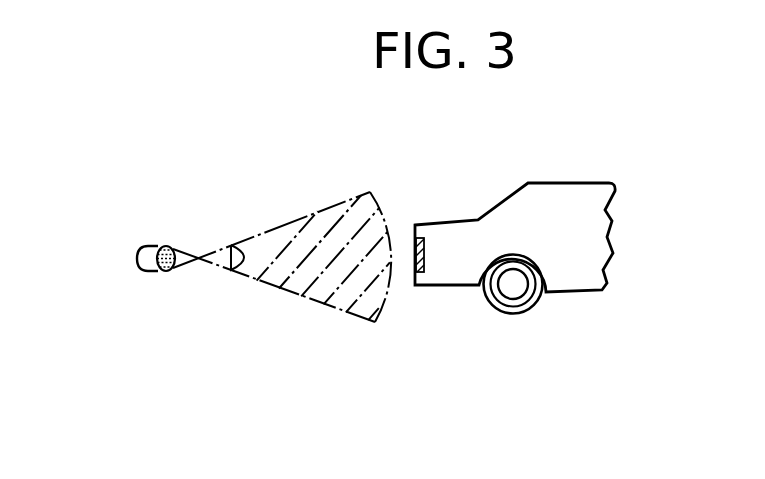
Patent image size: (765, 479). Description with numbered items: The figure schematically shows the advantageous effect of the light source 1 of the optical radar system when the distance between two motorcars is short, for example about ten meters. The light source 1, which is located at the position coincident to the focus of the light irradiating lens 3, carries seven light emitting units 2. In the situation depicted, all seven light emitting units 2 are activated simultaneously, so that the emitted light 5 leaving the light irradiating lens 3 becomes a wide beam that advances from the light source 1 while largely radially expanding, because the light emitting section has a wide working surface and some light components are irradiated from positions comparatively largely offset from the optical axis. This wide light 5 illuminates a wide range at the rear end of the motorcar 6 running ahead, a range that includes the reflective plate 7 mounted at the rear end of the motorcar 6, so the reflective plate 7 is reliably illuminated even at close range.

The light source 1 is at (140, 257).
The light emitting unit 2 is at (172, 247).
The light irradiating lens 3 is at (231, 271).
The emitted light 5 is at (285, 238).
The motorcar 6 is at (577, 197).
The reflective plate 7 is at (430, 243).